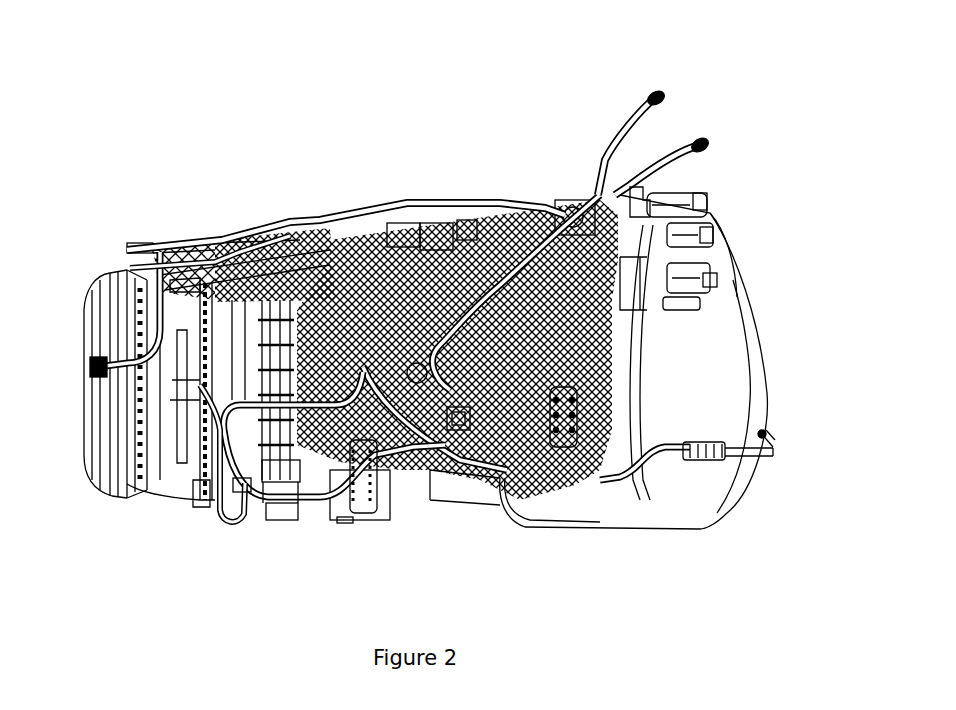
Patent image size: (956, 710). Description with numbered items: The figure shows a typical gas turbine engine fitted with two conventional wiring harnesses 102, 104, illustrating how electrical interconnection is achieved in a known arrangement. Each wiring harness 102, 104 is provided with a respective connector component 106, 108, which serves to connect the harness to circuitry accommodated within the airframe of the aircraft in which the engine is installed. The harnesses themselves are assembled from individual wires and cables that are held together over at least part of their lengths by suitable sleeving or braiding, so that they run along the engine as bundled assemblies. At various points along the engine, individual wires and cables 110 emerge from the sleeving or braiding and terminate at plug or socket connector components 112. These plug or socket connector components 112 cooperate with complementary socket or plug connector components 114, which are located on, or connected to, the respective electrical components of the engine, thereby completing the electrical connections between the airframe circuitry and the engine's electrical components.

The wiring harness 102 is at (500, 201).
The wiring harness 104 is at (618, 258).
The connector component 106 is at (707, 152).
The connector component 108 is at (645, 95).
The individual wires and cables 110 is at (330, 230).
The plug or socket connector component 112 is at (301, 505).
The complementary socket or plug connector component 114 is at (365, 513).